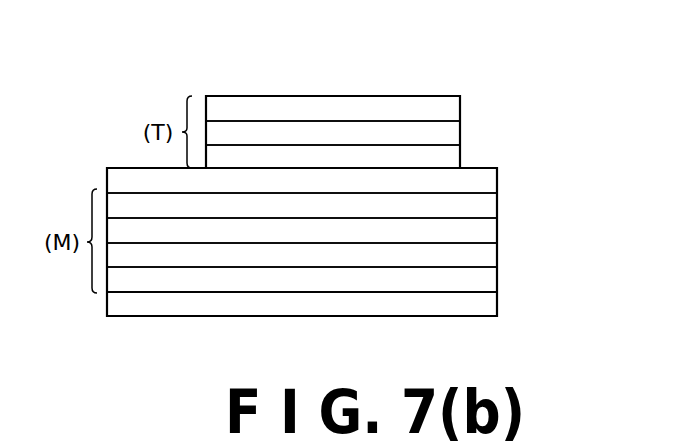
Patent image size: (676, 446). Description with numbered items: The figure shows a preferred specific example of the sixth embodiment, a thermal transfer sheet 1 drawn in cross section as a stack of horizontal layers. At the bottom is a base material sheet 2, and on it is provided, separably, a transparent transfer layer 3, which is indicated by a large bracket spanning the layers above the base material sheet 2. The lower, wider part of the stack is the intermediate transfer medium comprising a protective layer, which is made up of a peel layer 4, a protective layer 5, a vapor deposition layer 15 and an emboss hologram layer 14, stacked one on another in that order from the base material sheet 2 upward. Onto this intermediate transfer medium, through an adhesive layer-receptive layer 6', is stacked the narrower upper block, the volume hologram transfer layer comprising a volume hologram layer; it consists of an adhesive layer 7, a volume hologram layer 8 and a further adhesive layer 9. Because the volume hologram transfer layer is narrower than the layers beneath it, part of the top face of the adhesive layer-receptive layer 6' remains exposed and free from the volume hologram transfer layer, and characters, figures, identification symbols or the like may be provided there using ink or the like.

The thermal transfer sheet 1 is at (341, 78).
The base material sheet 2 is at (485, 306).
The transparent transfer layer 3 is at (578, 93).
The peel layer 4 is at (485, 278).
The protective layer 5 is at (485, 250).
The adhesive layer-receptive layer 6' is at (329, 176).
The adhesive layer 7 is at (445, 156).
The volume hologram layer 8 is at (445, 132).
The adhesive layer 9 is at (440, 103).
The emboss hologram layer 14 is at (484, 232).
The vapor deposition layer 15 is at (480, 210).